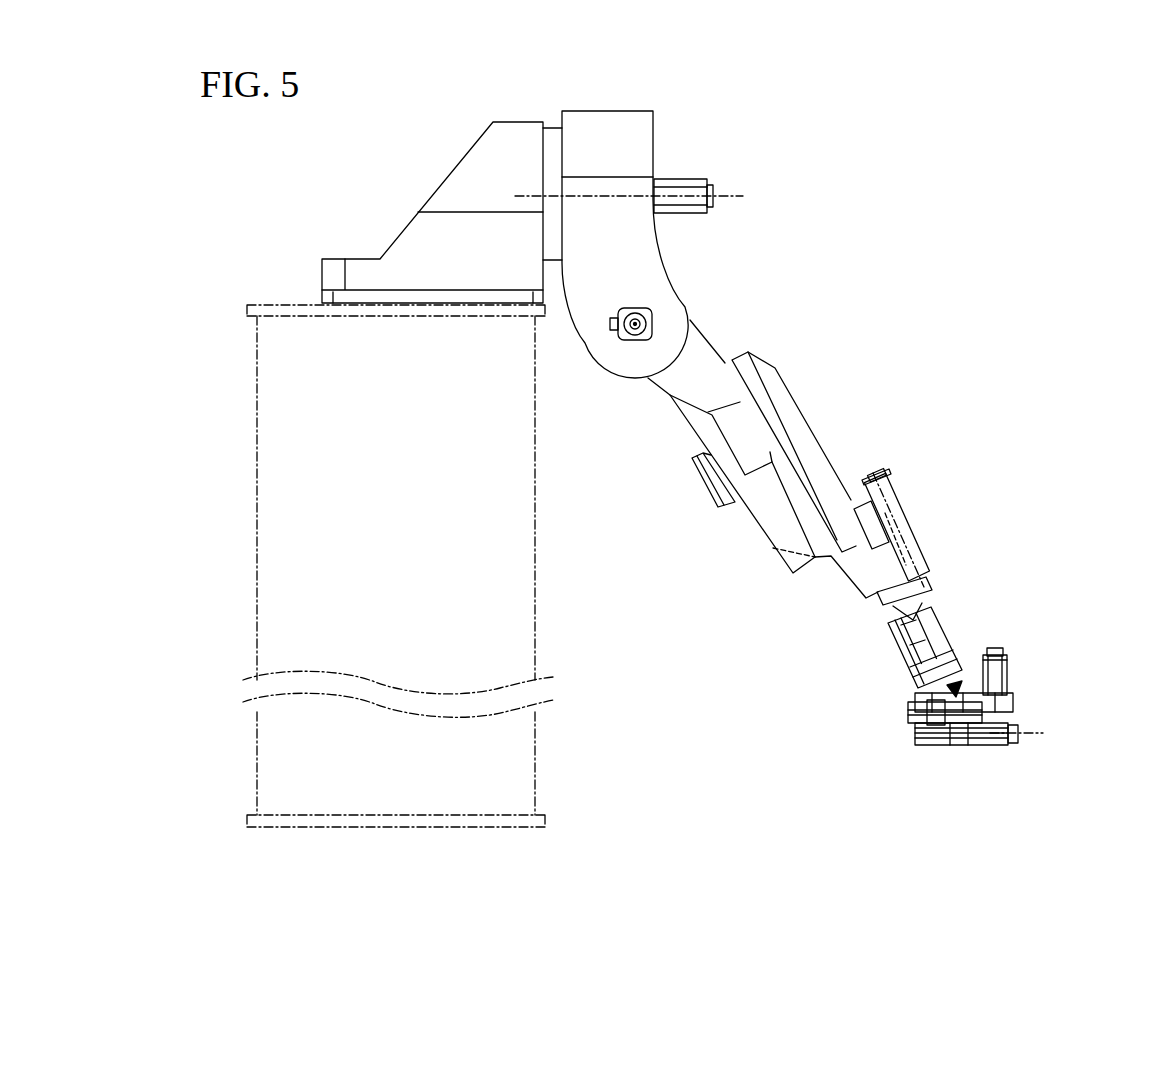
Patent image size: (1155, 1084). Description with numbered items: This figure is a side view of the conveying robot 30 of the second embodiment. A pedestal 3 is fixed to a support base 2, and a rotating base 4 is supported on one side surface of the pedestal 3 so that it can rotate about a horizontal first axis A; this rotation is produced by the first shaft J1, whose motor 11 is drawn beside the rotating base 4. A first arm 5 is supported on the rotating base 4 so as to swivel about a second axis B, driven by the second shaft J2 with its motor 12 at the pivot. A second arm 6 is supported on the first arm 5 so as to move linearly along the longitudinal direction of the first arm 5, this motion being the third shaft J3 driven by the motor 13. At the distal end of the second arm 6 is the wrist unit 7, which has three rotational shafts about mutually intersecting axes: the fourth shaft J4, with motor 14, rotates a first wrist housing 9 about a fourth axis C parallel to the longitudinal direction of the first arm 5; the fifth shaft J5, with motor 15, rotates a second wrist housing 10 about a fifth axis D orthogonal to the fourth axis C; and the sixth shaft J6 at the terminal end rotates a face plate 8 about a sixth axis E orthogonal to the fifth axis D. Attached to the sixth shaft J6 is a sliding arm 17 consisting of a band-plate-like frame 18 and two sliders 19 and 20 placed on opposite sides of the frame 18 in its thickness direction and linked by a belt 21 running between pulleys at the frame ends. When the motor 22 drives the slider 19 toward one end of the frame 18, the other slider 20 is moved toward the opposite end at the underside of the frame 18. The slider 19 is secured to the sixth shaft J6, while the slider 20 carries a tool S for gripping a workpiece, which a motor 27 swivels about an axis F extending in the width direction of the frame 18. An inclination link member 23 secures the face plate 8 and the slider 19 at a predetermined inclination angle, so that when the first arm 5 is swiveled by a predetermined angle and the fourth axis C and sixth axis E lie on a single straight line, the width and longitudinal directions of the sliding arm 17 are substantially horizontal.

The support base 2 is at (280, 298).
The pedestal 3 is at (450, 173).
The rotating base 4 is at (607, 111).
The first arm 5 is at (707, 340).
The second arm 6 is at (793, 392).
The wrist unit 7 is at (976, 632).
The face plate 8 is at (926, 683).
The first wrist housing 9 is at (880, 608).
The second wrist housing 10 is at (903, 650).
The motor 11 is at (683, 178).
The motor 12 is at (614, 333).
The motor 13 is at (708, 495).
The motor 14 is at (888, 480).
The motor 15 is at (867, 518).
The sliding arm 17 is at (1026, 742).
The frame 18 is at (952, 745).
The slider 19 is at (916, 698).
The slider 20 is at (935, 745).
The belt 21 is at (925, 745).
The motor 22 is at (1006, 665).
The inclination link member 23 is at (965, 672).
The motor 27 is at (998, 745).
The conveying robot 30 is at (926, 160).
The first axis A is at (727, 196).
The second axis B is at (634, 341).
The fourth axis C is at (895, 568).
The fifth axis D is at (890, 628).
The sixth axis E is at (908, 660).
The axis F is at (1037, 730).
The tool S is at (972, 744).
The first shaft J1 is at (548, 116).
The second shaft J2 is at (684, 287).
The third shaft J3 is at (818, 573).
The fourth shaft J4 is at (934, 578).
The fifth shaft J5 is at (943, 607).
The sixth shaft J6 is at (968, 745).